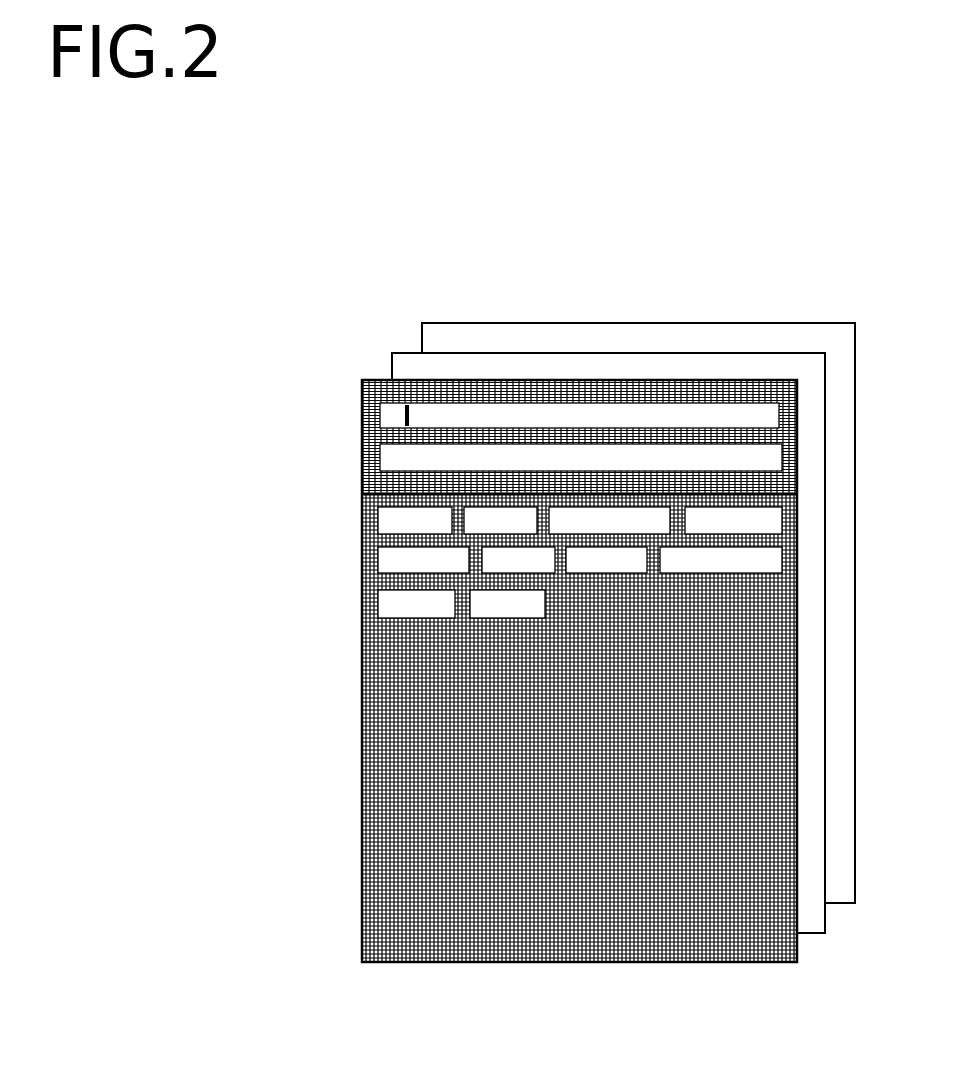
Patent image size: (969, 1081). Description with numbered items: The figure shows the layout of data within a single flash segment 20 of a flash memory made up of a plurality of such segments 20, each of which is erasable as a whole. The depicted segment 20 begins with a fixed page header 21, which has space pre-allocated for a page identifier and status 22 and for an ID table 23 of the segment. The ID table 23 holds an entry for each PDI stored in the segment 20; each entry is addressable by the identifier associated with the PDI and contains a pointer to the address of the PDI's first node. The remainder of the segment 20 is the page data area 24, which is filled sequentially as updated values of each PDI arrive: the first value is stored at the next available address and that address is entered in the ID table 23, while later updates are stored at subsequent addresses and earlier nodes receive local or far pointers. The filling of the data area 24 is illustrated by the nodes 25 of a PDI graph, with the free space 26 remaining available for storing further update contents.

The flash segment 20 is at (558, 380).
The fixed page header 21 is at (362, 445).
The page identifier and status 22 is at (393, 417).
The ID table 23 is at (618, 457).
The page data area 24 is at (360, 546).
The nodes 25 is at (415, 605).
The free space 26 is at (460, 803).